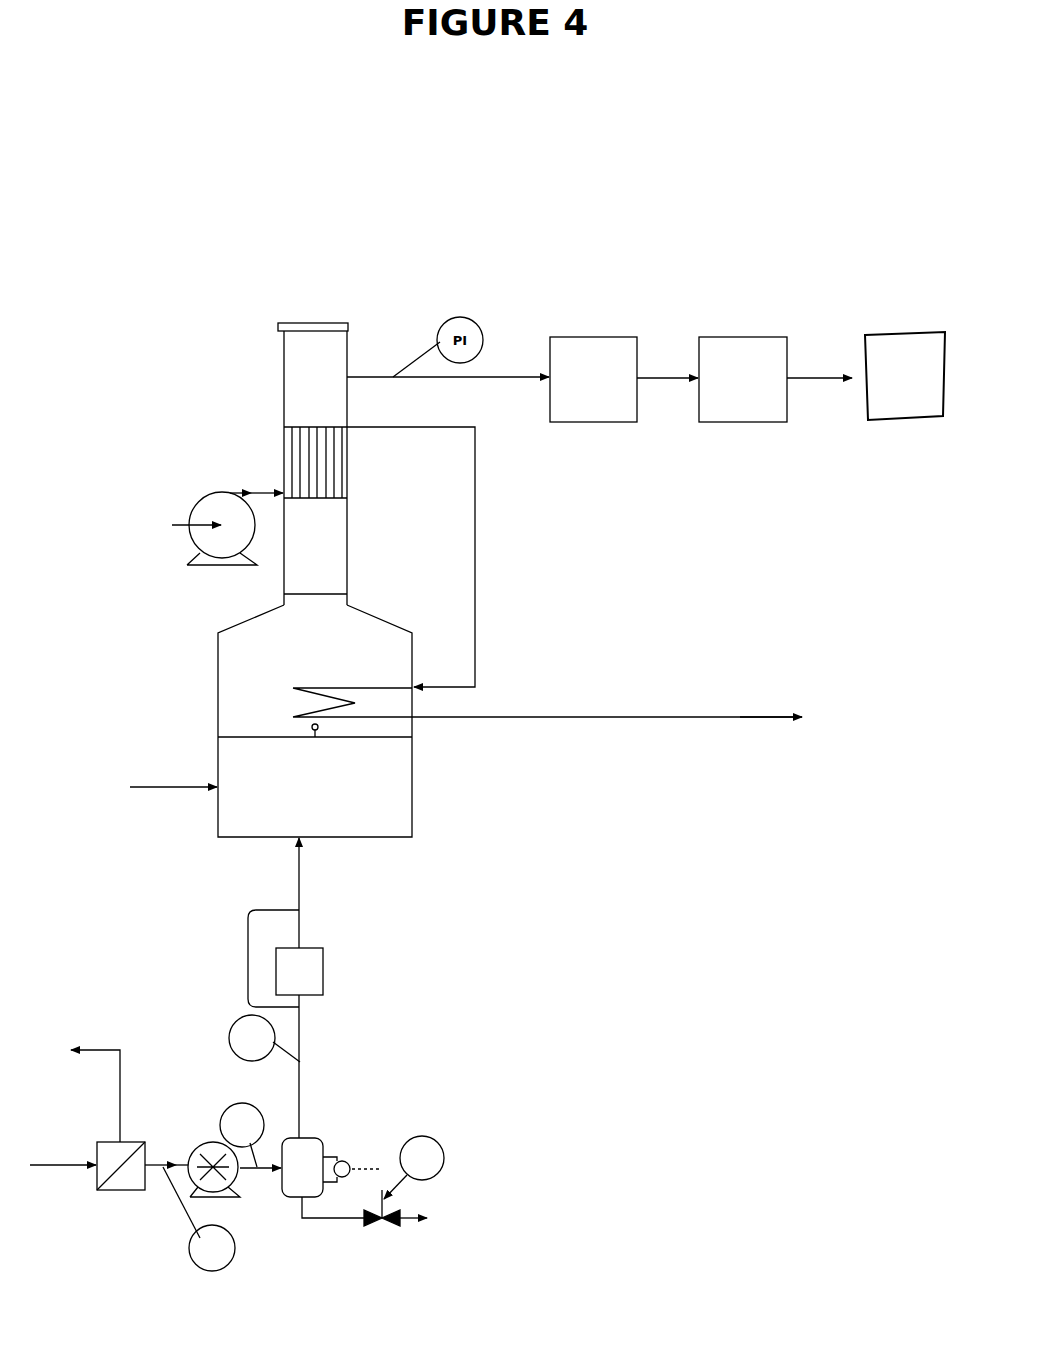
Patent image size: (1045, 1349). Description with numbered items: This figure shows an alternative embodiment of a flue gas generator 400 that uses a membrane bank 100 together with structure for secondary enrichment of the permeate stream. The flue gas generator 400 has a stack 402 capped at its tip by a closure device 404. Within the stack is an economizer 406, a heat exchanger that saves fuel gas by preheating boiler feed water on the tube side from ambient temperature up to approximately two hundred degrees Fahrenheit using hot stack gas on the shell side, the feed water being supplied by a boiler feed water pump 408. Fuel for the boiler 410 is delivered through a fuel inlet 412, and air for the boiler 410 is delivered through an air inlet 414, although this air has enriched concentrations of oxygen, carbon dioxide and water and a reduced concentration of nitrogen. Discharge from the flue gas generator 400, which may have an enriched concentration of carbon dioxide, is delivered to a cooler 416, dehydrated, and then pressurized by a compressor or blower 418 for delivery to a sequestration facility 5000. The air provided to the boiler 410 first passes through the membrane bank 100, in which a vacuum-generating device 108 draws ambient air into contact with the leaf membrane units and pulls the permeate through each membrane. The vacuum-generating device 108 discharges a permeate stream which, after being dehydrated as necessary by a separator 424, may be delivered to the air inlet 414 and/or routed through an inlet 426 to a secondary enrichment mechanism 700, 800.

The flue gas generator 400 is at (463, 549).
The stack 402 is at (243, 382).
The closure device 404 is at (360, 323).
The economizer 406 is at (260, 442).
The boiler feed water pump 408 is at (193, 497).
The boiler 410 is at (248, 647).
The fuel inlet 412 is at (127, 768).
The air inlet 414 is at (315, 892).
The cooler 416 is at (624, 364).
The compressor or blower 418 is at (775, 364).
The sequestration facility 5000 is at (905, 360).
The secondary enrichment mechanism 700 is at (364, 971).
The secondary enrichment mechanism 800 is at (335, 970).
The inlet 426 is at (303, 1005).
The separator 424 is at (318, 1132).
The vacuum-generating device 108 is at (193, 1122).
The membrane bank 100 is at (110, 1202).